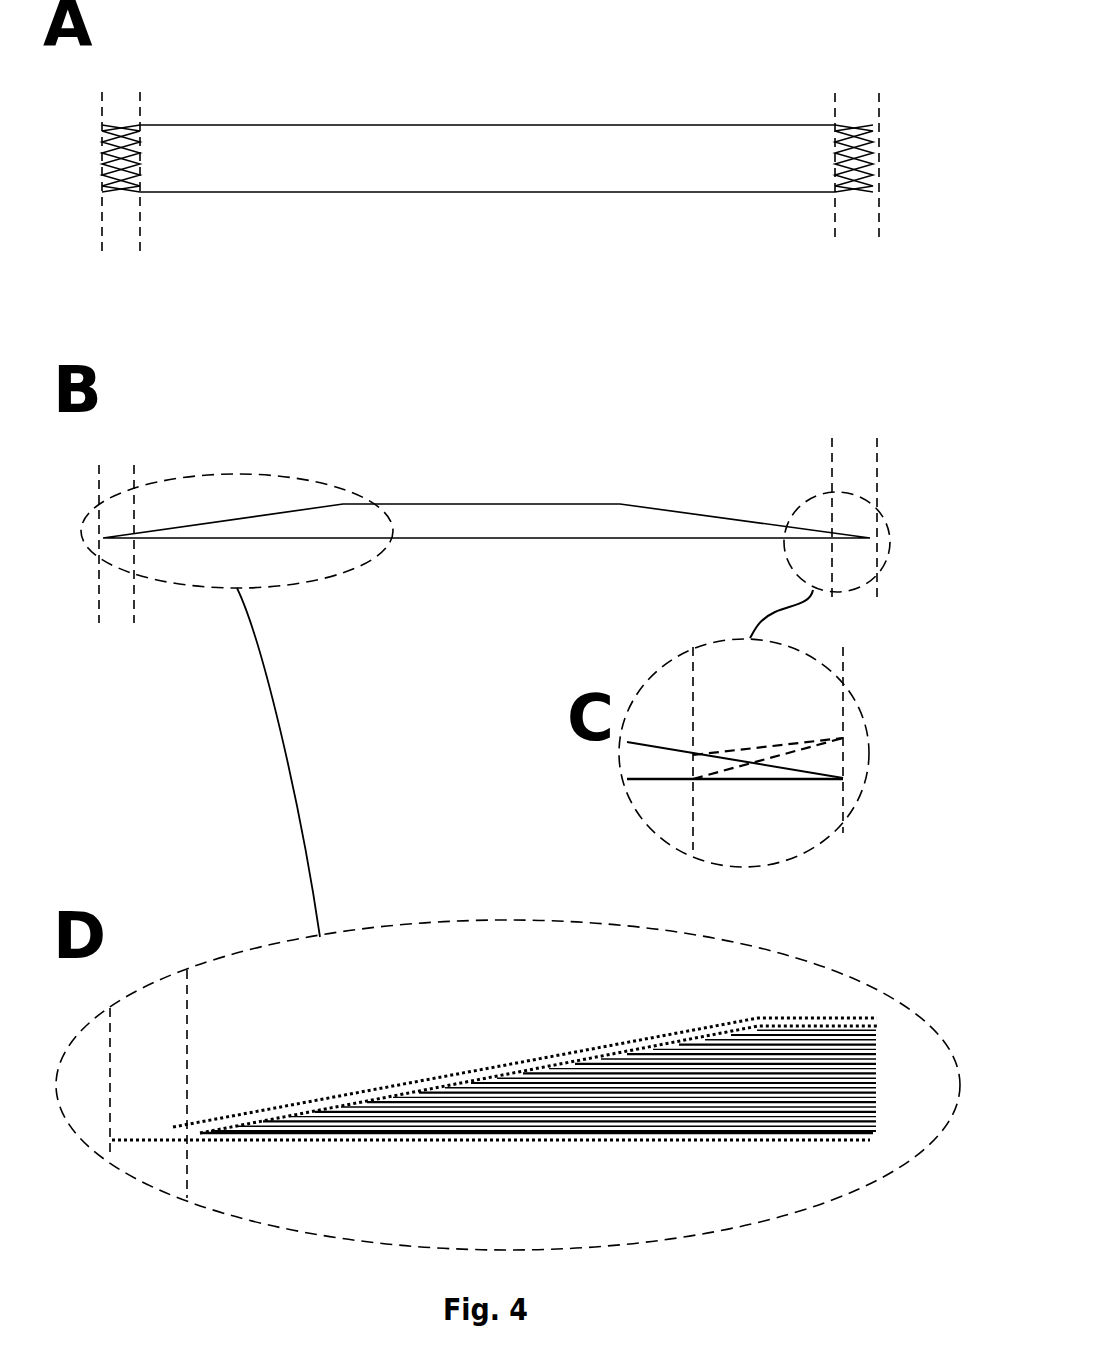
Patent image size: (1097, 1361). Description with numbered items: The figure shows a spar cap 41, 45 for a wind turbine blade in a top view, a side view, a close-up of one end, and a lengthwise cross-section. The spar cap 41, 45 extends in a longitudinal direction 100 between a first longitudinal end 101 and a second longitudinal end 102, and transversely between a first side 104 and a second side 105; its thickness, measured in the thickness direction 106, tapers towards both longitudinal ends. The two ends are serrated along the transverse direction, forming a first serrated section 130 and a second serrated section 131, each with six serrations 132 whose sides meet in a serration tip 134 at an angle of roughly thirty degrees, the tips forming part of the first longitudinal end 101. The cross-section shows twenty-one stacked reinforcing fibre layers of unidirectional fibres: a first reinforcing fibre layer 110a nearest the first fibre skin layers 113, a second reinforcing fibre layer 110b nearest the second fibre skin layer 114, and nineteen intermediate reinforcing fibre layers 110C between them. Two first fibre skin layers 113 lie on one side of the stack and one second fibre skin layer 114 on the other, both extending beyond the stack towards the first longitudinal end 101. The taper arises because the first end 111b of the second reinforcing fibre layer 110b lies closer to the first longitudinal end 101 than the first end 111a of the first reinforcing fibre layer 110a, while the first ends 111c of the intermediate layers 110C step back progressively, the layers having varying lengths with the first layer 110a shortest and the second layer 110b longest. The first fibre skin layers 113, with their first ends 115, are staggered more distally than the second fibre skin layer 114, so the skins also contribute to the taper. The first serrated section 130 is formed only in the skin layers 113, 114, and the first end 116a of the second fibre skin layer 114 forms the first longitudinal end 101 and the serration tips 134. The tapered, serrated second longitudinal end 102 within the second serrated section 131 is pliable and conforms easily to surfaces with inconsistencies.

In FIG. 4A, the first spar cap 41 is at (499, 174).
In FIG. 4B, the first spar cap 41 is at (508, 655).
In FIG. 4A, the second spar cap 45 is at (366, 90).
In FIG. 4B, the second spar cap 45 is at (426, 472).
In FIG. 4A, the longitudinal direction 100 is at (633, 220).
In FIG. 4B, the longitudinal direction 100 is at (640, 575).
In FIG. 4A, the first longitudinal end of spar cap 101 is at (100, 188).
In FIG. 4B, the first longitudinal end of spar cap 101 is at (103, 540).
In FIG. 4D, the first longitudinal end of spar cap 101 is at (112, 1141).
In FIG. 4A, the second longitudinal end of spar cap 102 is at (877, 187).
In FIG. 4B, the second longitudinal end of spar cap 102 is at (873, 540).
In FIG. 4C, the second longitudinal end of spar cap 102 is at (843, 737).
In FIG. 4A, the first side of spar cap 104 is at (220, 193).
In FIG. 4B, the first side of spar cap 104 is at (328, 530).
In FIG. 4A, the second side of spar cap 105 is at (558, 125).
In FIG. 4A, the thickness direction 106 is at (908, 137).
In FIG. 4B, the thickness direction 106 is at (903, 497).
In FIG. 4D, the first reinforcing fibre layer 110a is at (787, 1028).
In FIG. 4D, the second reinforcing fibre layer 110b is at (323, 1137).
In FIG. 4D, the intermediate reinforcing fibre layer 110C is at (537, 1080).
In FIG. 4D, the first end of first reinforcing fibre layer 111a is at (747, 1030).
In FIG. 4D, the first end of second reinforcing fibre layer 111b is at (200, 1128).
In FIG. 4D, the first end of intermediate reinforcing fibre layer 111c is at (440, 1087).
In FIG. 4A, the first fibre skin layer 113 is at (302, 140).
In FIG. 4D, the first fibre skin layer 113 is at (547, 1053).
In FIG. 4D, the second fibre skin layer 114 is at (608, 1141).
In FIG. 4D, the first end of first fibre skin layer 115 is at (142, 1130).
In FIG. 4D, the first end of primary second fibre skin layer 116a is at (525, 1075).
In FIG. 4A, the first serrated section 130 is at (102, 80).
In FIG. 4B, the first serrated section 130 is at (99, 454).
In FIG. 4D, the first serrated section 130 is at (110, 1067).
In FIG. 4A, the second serrated section 131 is at (835, 72).
In FIG. 4B, the second serrated section 131 is at (832, 427).
In FIG. 4C, the second serrated section 131 is at (693, 723).
In FIG. 4A, the serration 132 is at (127, 190).
In FIG. 4A, the serration tip 134 is at (499, 174).
In FIG. 4B, the serration tip 134 is at (508, 655).
In FIG. 4C, the serration tip 134 is at (791, 748).
In FIG. 4D, the serration tip 134 is at (467, 1118).